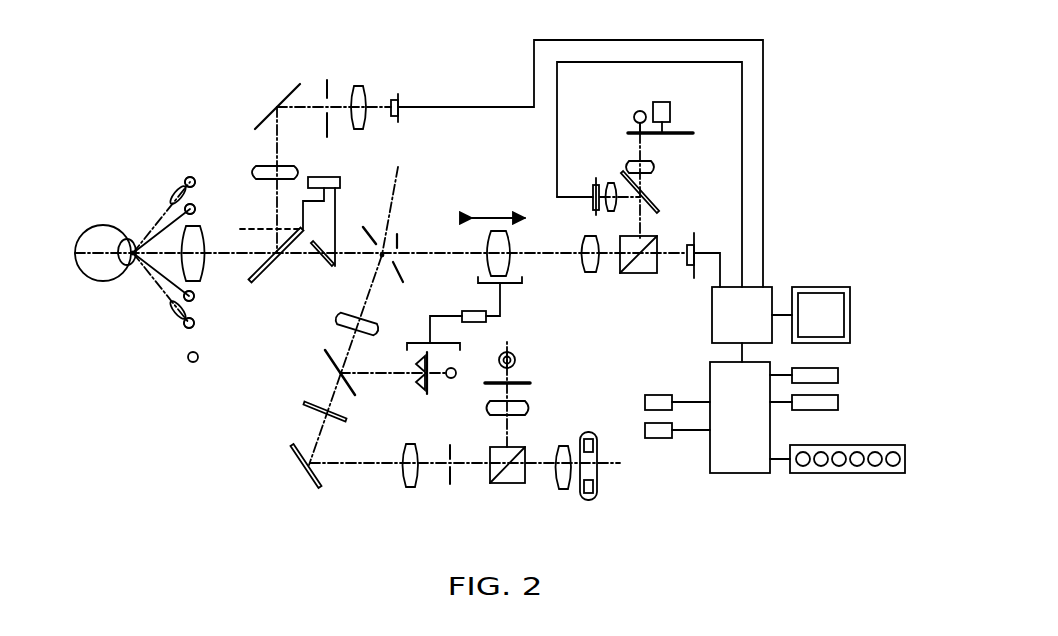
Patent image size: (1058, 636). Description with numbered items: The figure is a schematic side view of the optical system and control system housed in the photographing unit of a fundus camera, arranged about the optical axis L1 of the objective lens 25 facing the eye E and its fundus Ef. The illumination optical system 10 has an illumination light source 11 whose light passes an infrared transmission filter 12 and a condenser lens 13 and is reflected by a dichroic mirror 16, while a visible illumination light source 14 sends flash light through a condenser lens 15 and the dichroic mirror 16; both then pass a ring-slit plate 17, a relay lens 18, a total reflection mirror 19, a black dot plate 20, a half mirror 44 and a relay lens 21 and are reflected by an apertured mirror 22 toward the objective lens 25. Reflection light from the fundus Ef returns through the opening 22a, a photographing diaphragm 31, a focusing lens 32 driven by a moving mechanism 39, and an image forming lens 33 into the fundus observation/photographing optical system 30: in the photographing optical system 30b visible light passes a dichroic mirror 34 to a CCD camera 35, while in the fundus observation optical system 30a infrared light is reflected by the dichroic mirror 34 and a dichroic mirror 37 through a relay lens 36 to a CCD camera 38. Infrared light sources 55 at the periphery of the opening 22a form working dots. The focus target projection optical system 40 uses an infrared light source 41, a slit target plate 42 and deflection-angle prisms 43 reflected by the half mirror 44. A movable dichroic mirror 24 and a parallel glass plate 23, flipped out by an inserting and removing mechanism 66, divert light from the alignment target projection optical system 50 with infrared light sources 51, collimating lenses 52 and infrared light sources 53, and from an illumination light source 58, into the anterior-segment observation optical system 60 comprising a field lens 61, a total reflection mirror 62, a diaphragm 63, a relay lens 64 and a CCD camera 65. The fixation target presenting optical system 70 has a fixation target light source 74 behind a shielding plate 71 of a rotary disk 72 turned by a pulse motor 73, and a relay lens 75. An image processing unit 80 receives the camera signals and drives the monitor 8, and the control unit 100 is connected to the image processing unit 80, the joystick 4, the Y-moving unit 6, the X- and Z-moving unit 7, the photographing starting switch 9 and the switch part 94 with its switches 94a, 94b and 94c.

The eye E is at (100, 281).
The fundus Ef is at (74, 243).
The optical axis L1 is at (232, 256).
The illumination optical system 10 is at (262, 432).
The alignment target projection optical system 50 is at (147, 207).
The infrared light source 51 is at (189, 177).
The collimating lens 52 is at (172, 192).
The infrared light source 53 is at (194, 205).
The illumination light source for anterior-segment observation 58 is at (192, 362).
The objective lens 25 is at (198, 232).
The dichroic mirror 24 is at (256, 283).
The parallel glass plate 23 is at (322, 257).
The apertured mirror 22 is at (372, 225).
The opening 22a is at (378, 260).
The relay lens 21 is at (338, 321).
The black dot plate 20 is at (307, 403).
The total reflection mirror 19 is at (300, 458).
The relay lens 18 is at (407, 473).
The ring-slit plate 17 is at (448, 478).
The dichroic mirror 16 is at (514, 478).
The condenser lens 15 is at (563, 478).
The visible illumination light source 14 is at (597, 475).
The condenser lens 13 is at (530, 409).
The infrared transmission filter 12 is at (531, 383).
The illumination light source 11 is at (518, 357).
The photographing diaphragm 31 is at (400, 233).
The fundus observation/photographing optical system 30 is at (453, 176).
The fundus observation optical system 30a is at (545, 192).
The photographing optical system 30b is at (672, 270).
The focusing lens 32 is at (488, 236).
The image forming lens 33 is at (586, 240).
The dichroic mirror 34 is at (628, 271).
The CCD camera for photographing 35 is at (697, 250).
The relay lens 36 is at (613, 210).
The dichroic mirror 37 is at (658, 212).
The CCD camera for fundus observation 38 is at (596, 180).
The moving mechanism 39 is at (469, 313).
The focus target projection optical system 40 is at (387, 378).
The infrared light source 41 is at (452, 379).
The slit target plate 42 is at (428, 382).
The deflection-angle prisms 43 is at (419, 362).
The half mirror 44 is at (323, 358).
The infrared light sources 55 is at (359, 303).
The anterior-segment observation optical system 60 is at (262, 98).
The field lens 61 is at (254, 172).
The total reflection mirror 62 is at (295, 86).
The diaphragm 63 is at (328, 78).
The relay lens 64 is at (362, 86).
The CCD camera for anterior-segment observation 65 is at (398, 96).
The inserting and removing mechanism 66 is at (326, 180).
The fixation target presenting optical system 70 is at (695, 154).
The shielding plate 71 is at (636, 128).
The rotary disk 72 is at (693, 133).
The pulse motor 73 is at (672, 108).
The fixation target light source 74 is at (638, 112).
The relay lens 75 is at (637, 162).
The image processing unit 80 is at (712, 328).
The monitor 8 is at (824, 288).
The control unit 100 is at (710, 455).
The joystick 4 is at (645, 402).
The Y-moving unit 6 is at (838, 375).
The X- and Z-moving unit 7 is at (838, 402).
The photographing starting switch 9 is at (645, 430).
The switch part 94 is at (868, 446).
The switch 94a is at (893, 466).
The switch 94b is at (875, 466).
The switch 94c is at (857, 466).